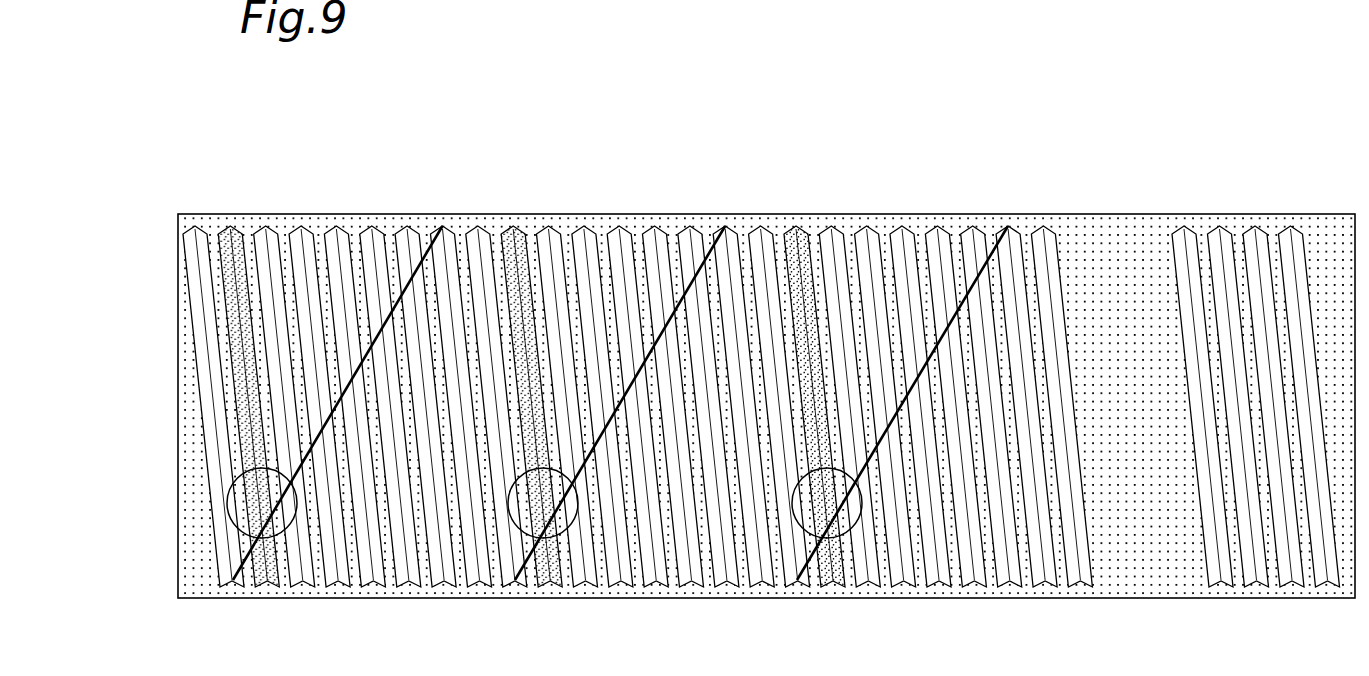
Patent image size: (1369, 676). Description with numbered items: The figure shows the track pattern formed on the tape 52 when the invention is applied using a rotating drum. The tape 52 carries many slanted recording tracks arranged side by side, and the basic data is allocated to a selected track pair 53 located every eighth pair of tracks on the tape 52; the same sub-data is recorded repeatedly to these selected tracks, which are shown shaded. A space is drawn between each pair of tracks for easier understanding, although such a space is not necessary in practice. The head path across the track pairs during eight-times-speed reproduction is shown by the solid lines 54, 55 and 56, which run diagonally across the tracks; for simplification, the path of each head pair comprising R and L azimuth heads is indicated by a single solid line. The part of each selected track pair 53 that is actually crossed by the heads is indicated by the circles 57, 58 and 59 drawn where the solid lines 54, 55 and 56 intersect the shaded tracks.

The tape 52 is at (178, 214).
The selected track pair 53 is at (232, 228).
The solid line 54 is at (443, 228).
The solid line 55 is at (722, 228).
The solid line 56 is at (1008, 228).
The circle 57 is at (260, 538).
The circle 58 is at (545, 538).
The circle 59 is at (830, 538).